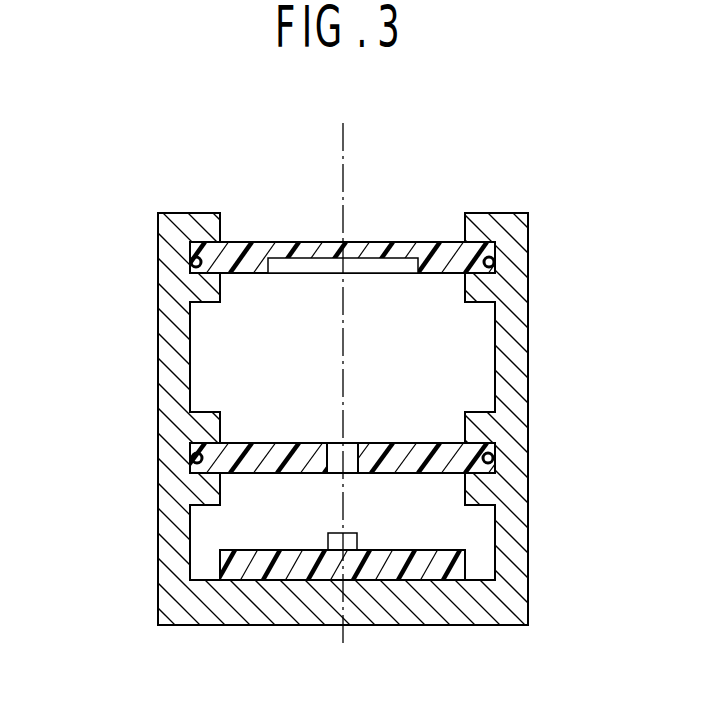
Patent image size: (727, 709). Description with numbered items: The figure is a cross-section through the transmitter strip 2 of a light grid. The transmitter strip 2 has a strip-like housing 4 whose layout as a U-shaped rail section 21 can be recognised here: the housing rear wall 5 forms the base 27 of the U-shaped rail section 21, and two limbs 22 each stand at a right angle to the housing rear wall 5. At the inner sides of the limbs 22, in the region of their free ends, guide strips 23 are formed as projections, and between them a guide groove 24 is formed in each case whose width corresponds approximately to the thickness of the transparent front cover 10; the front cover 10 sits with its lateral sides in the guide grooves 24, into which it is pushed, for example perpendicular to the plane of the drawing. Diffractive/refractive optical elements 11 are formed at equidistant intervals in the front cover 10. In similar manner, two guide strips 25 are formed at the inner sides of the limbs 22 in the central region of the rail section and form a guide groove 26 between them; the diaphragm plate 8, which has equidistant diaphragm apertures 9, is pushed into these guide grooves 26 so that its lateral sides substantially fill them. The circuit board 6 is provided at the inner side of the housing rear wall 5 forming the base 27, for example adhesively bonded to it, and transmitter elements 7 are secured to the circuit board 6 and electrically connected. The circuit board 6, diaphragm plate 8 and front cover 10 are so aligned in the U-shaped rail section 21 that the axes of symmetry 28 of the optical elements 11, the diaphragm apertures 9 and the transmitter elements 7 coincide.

The transmitter strip 2 is at (141, 348).
The housing 4 is at (159, 529).
The housing rear wall 5 is at (275, 600).
The circuit board 6 is at (388, 560).
The transmitter elements 7 is at (345, 535).
The diaphragm plate 8 is at (270, 462).
The diaphragm apertures 9 is at (348, 443).
The front cover 10 is at (277, 242).
The diffractive/refractive optical elements 11 is at (378, 258).
The U-shaped rail section 21 is at (170, 308).
The limbs 22 is at (175, 387).
The guide strips 23 is at (215, 212).
The guide groove 24 is at (190, 250).
The guide strips 25 is at (216, 436).
The guide groove 26 is at (190, 455).
The base 27 is at (210, 578).
The axes of symmetry 28 is at (345, 165).